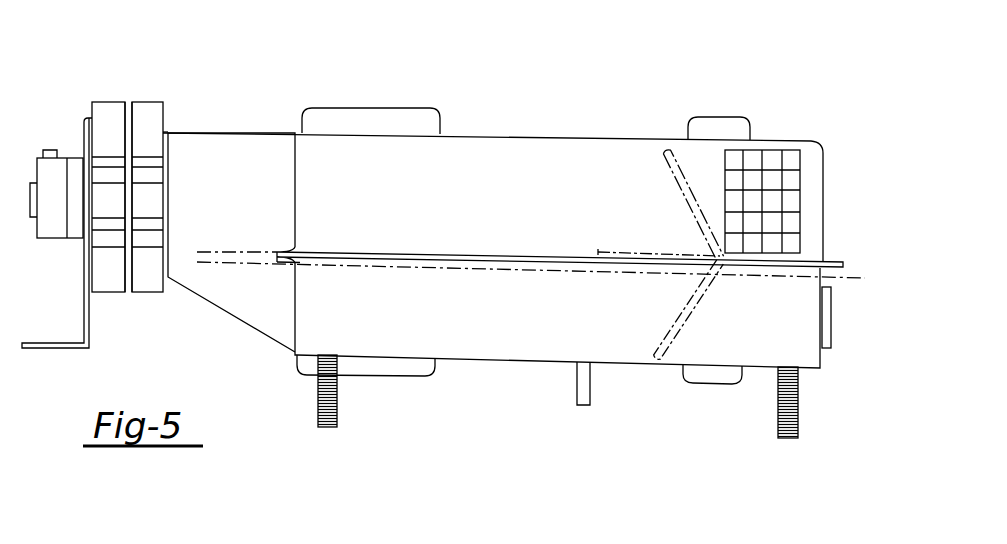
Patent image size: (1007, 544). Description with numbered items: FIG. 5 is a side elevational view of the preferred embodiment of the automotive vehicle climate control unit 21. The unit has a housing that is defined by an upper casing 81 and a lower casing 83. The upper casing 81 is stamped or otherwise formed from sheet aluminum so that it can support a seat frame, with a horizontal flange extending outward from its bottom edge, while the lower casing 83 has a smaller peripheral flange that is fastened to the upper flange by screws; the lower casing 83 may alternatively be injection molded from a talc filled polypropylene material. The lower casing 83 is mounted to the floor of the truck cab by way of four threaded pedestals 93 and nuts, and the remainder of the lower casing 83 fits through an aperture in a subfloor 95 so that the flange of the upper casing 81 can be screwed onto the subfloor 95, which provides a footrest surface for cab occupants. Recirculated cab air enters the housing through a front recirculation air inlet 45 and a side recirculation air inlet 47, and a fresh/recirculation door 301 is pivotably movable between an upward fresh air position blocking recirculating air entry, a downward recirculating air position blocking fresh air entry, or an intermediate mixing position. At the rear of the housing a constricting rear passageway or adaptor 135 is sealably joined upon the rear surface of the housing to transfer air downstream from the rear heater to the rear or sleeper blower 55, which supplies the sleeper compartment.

The climate control unit 21 is at (474, 79).
The rear or sleeper blower 55 is at (113, 117).
The upper casing 81 is at (358, 160).
The lower casing 83 is at (330, 320).
The constricting rear passageway or adaptor 135 is at (242, 199).
The fresh/recirculation door 301 is at (677, 193).
The side recirculation air inlet 47 is at (770, 187).
The front recirculation air inlet 45 is at (836, 236).
The subfloor 95 is at (847, 282).
The threaded pedestals 93 is at (337, 405).